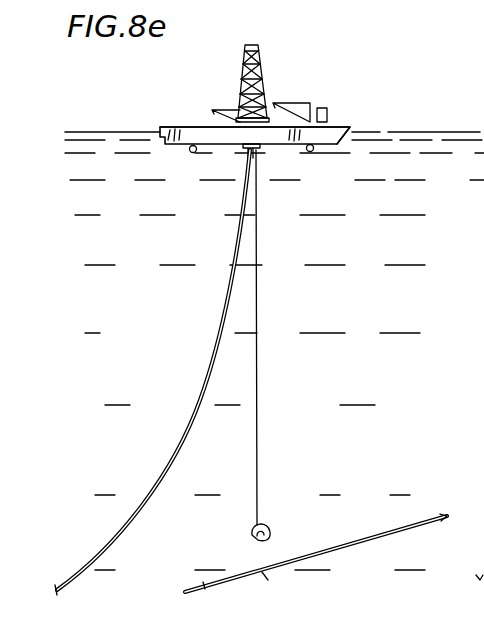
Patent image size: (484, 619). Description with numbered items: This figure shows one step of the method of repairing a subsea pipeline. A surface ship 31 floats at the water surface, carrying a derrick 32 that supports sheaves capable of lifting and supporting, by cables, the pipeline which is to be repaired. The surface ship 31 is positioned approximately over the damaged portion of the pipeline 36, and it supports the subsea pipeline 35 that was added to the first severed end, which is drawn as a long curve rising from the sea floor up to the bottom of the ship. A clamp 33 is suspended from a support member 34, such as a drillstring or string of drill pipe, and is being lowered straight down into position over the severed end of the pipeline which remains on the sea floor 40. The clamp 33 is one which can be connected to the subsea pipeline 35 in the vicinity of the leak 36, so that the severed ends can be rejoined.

The surface ship 31 is at (291, 148).
The derrick 32 is at (262, 72).
The clamp 33 is at (274, 524).
The support member 34 is at (267, 391).
The subsea pipeline 35 is at (212, 343).
The damaged portion of the pipeline 36 is at (202, 577).
The severed end of the pipeline on the sea floor 40 is at (270, 581).